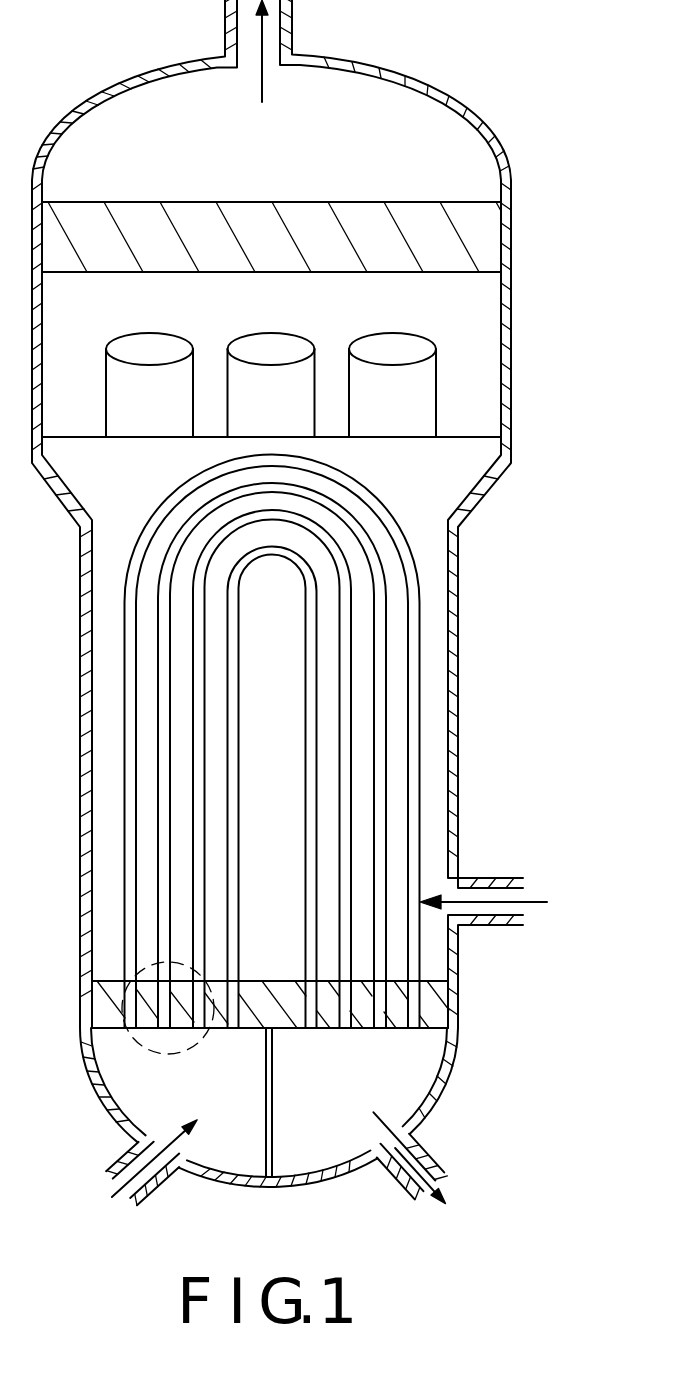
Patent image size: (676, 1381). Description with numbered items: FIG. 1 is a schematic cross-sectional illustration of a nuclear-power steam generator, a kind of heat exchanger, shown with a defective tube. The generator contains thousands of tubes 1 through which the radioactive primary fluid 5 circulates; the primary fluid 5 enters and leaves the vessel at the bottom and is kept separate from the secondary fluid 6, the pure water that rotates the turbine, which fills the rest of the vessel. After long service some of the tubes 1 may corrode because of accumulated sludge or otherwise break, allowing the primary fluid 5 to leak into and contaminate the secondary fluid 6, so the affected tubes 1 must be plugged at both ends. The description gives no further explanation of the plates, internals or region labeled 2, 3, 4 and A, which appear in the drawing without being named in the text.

The tubes 1 is at (197, 902).
The tube sheet 2 is at (437, 1002).
The steam separators 3 is at (410, 396).
The steam dryer 4 is at (488, 232).
The primary fluid 5 is at (125, 1077).
The secondary fluid 6 is at (436, 128).
The enlarged portion A is at (110, 1063).